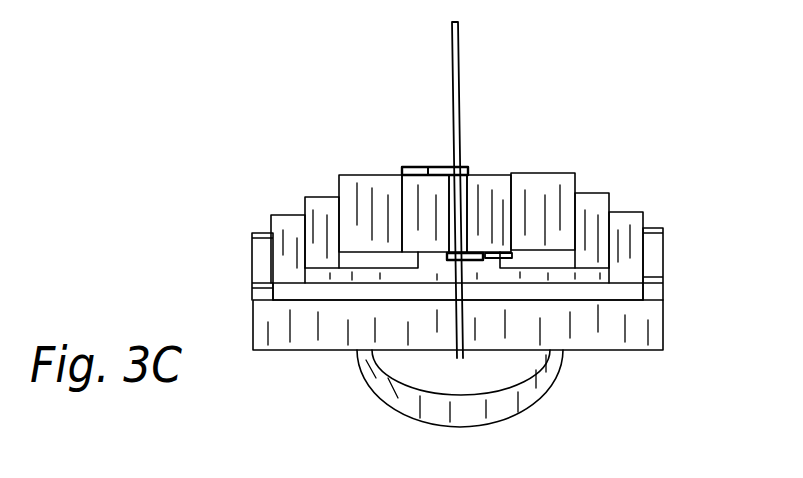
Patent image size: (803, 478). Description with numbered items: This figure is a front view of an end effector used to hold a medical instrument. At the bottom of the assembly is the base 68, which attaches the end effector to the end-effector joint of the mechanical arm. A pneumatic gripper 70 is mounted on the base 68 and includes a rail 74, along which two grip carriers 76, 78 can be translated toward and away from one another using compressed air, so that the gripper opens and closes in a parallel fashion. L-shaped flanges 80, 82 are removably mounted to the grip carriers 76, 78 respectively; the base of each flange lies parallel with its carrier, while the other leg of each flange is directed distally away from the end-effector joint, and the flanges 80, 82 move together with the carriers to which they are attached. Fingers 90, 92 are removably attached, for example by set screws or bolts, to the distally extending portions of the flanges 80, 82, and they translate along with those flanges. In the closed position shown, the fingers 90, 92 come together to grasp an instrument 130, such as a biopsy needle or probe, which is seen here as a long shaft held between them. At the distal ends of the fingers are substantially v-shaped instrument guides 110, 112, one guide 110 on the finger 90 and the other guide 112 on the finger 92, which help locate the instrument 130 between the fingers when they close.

The base 68 is at (388, 388).
The pneumatic gripper 70 is at (663, 323).
The rail 74 is at (252, 263).
The grip carrier 76 is at (628, 212).
The grip carrier 78 is at (283, 215).
The L-shaped flange 80 is at (593, 192).
The L-shaped flange 82 is at (320, 197).
The finger 90 is at (492, 175).
The finger 92 is at (373, 175).
The instrument guide 110 is at (477, 260).
The instrument guide 112 is at (408, 167).
The instrument 130 is at (458, 80).